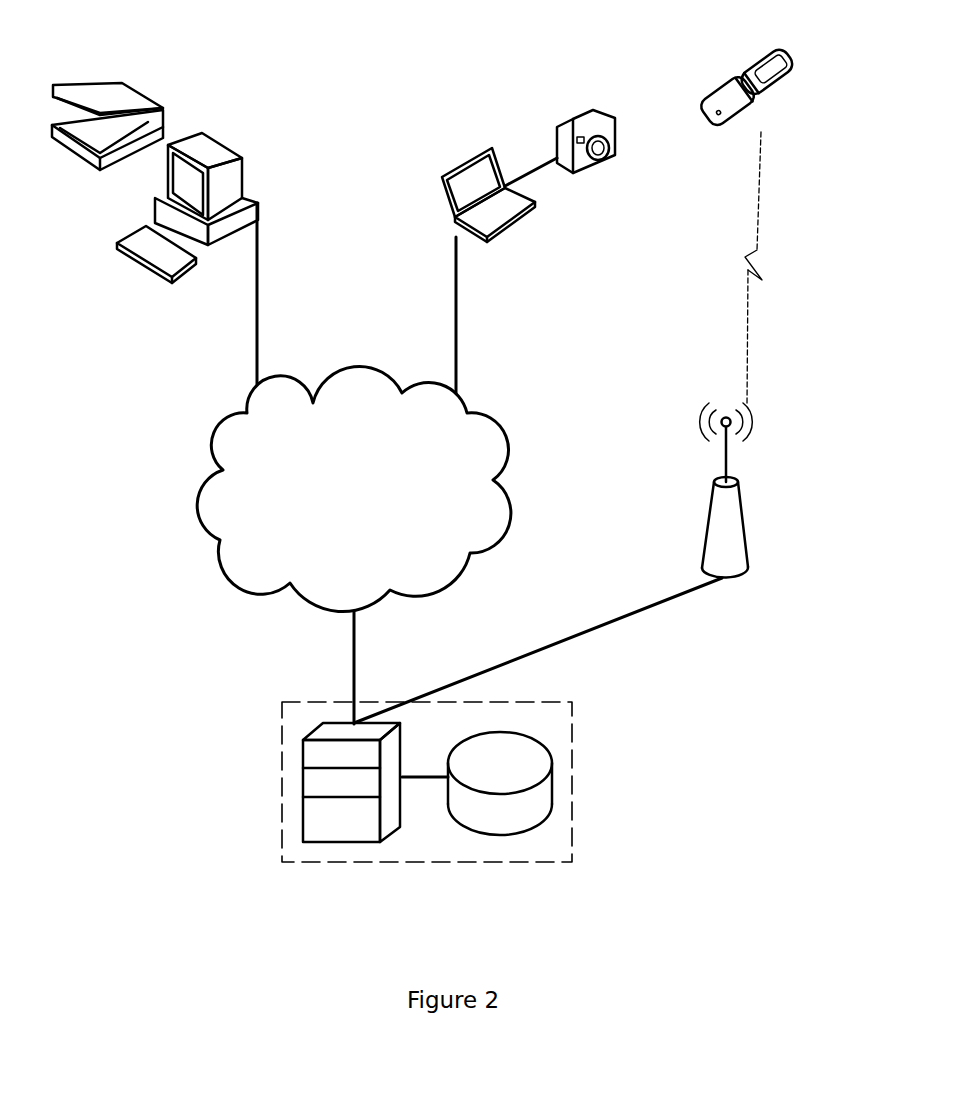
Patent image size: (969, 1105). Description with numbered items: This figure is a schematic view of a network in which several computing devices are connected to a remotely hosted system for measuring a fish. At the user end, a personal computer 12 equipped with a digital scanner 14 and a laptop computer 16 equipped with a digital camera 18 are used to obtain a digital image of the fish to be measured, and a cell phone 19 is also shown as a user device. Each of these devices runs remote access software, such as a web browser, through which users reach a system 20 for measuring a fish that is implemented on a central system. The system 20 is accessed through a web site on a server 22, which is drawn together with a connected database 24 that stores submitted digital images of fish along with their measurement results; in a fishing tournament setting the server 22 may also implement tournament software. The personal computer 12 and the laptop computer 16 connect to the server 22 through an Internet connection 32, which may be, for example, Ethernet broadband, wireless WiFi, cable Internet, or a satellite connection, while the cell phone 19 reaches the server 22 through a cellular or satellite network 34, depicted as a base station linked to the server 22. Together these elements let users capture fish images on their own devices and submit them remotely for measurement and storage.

The personal computer 12 is at (223, 147).
The digital scanner 14 is at (147, 97).
The laptop computer 16 is at (477, 153).
The digital camera 18 is at (580, 110).
The cell phone 19 is at (737, 70).
The system for measuring a fish 20 is at (282, 755).
The server 22 is at (325, 842).
The database 24 is at (490, 837).
The Internet connection 32 is at (497, 415).
The cellular or satellite network 34 is at (705, 520).